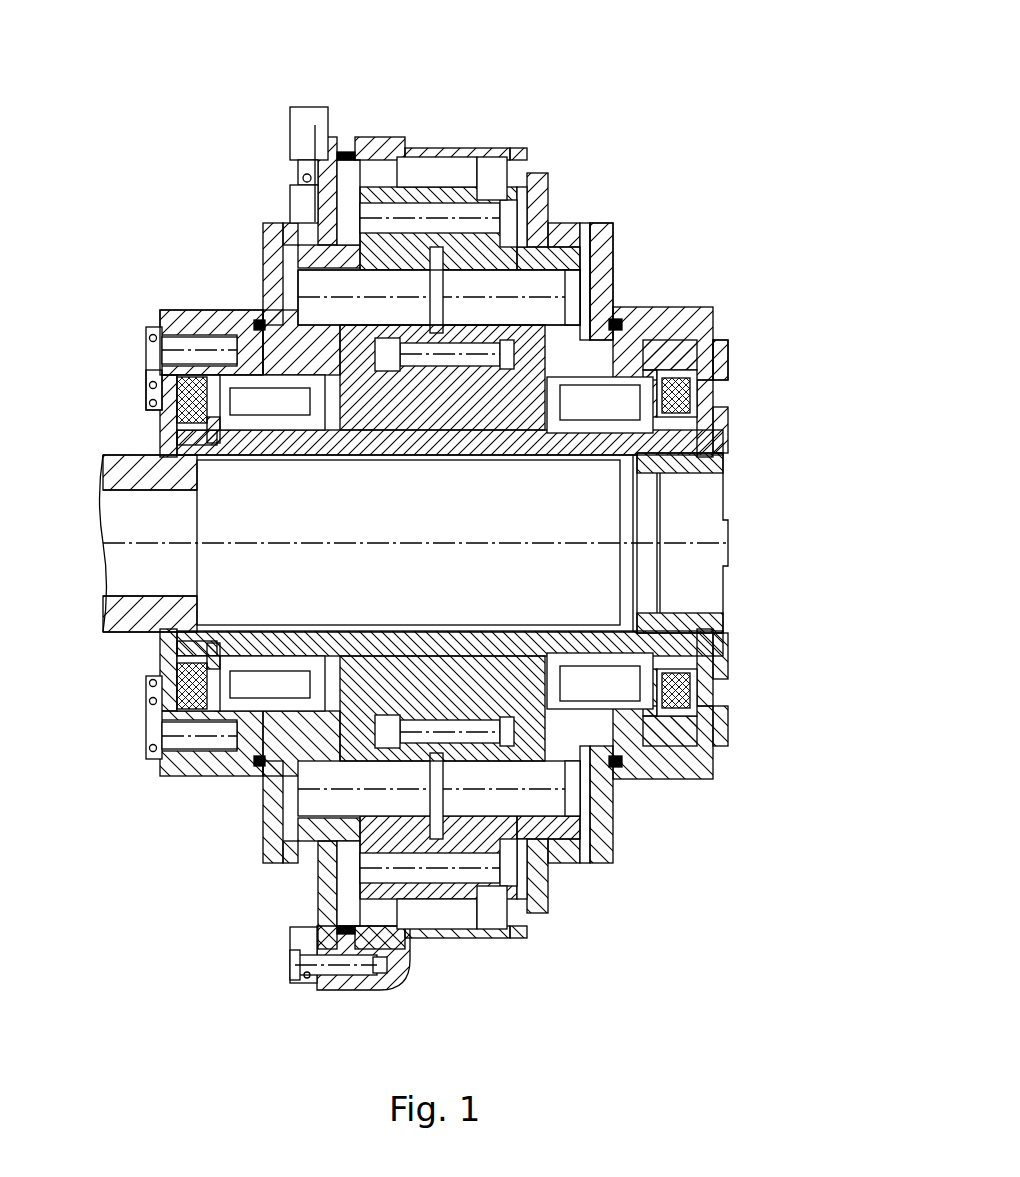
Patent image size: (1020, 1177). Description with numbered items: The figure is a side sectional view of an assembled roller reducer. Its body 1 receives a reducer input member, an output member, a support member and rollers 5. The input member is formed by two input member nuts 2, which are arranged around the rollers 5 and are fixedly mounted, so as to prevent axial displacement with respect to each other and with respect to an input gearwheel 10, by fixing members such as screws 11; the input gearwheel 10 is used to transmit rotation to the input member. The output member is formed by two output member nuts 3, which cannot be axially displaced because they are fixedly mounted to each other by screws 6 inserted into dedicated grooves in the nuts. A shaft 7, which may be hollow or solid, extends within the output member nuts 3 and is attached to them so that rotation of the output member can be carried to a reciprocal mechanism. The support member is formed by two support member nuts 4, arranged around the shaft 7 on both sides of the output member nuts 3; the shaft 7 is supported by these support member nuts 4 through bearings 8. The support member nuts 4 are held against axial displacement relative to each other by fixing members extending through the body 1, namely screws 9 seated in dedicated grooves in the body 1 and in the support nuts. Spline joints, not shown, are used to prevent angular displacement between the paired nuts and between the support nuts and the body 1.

The body 1 is at (262, 255).
The input member nuts 2 is at (473, 260).
The output member nuts 3 is at (650, 474).
The support member nuts 4 is at (197, 320).
The rollers 5 is at (525, 305).
The screws 6 is at (405, 352).
The shaft 7 is at (118, 455).
The bearings 8 is at (147, 372).
The screws 9 is at (187, 348).
The input gearwheel 10 is at (440, 175).
The screws 11 is at (387, 213).